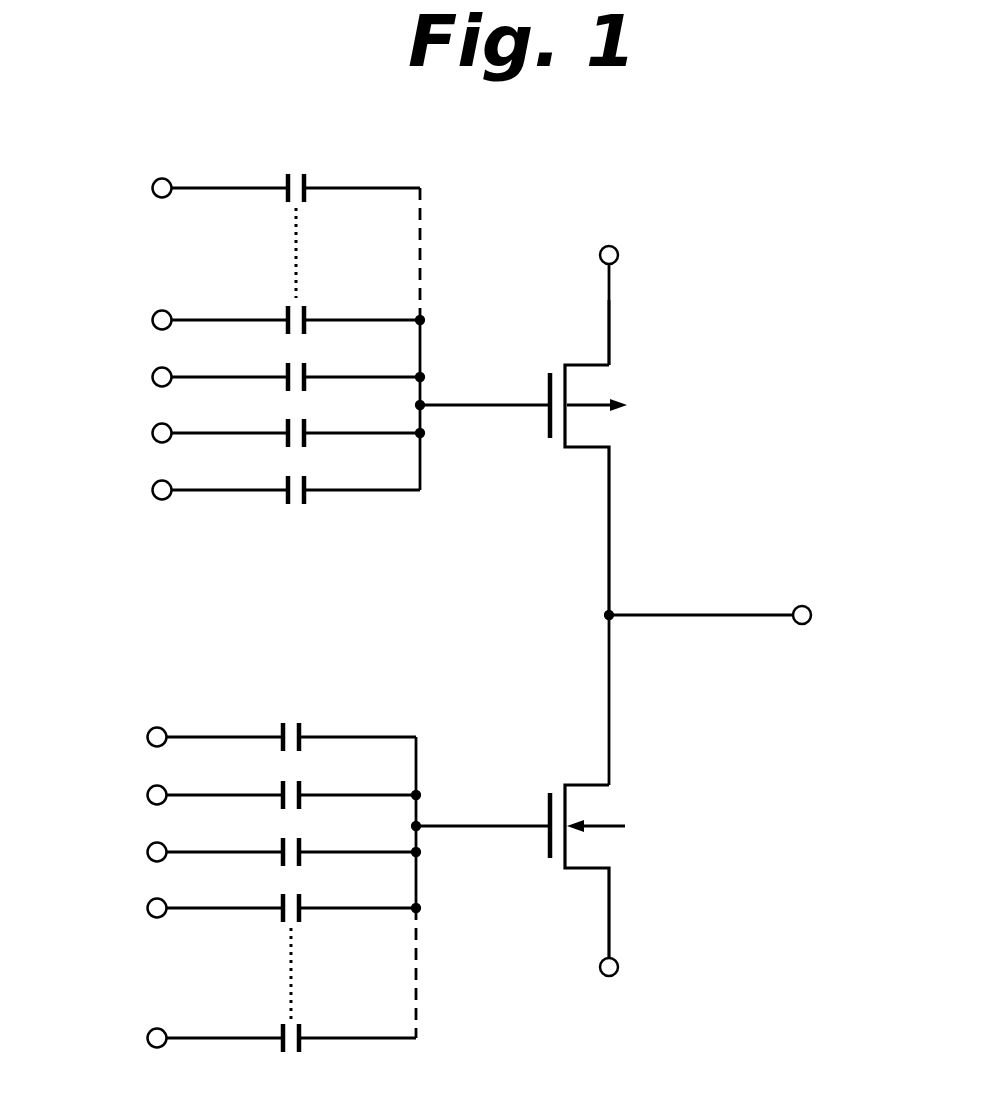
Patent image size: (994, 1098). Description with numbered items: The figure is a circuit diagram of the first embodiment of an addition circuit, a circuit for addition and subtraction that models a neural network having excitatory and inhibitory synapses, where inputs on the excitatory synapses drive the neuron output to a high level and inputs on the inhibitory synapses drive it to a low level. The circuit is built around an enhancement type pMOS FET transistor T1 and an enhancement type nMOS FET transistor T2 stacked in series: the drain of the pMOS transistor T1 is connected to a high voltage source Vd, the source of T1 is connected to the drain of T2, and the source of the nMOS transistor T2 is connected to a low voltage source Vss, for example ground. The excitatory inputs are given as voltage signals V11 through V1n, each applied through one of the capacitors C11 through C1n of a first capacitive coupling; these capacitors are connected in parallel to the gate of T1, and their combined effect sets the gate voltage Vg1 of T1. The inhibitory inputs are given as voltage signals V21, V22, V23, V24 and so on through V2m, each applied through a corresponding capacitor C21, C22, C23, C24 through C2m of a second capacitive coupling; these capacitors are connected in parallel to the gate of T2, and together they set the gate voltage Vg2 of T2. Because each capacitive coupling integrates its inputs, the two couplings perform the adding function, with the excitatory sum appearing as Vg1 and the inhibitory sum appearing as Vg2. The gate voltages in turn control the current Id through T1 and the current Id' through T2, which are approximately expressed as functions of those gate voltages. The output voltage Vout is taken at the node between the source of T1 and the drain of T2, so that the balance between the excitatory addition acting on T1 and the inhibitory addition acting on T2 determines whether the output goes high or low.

The excitatory input voltage signal V11 is at (167, 184).
The excitatory input voltage signal V1n is at (167, 486).
The excitatory coupling capacitor C11 is at (354, 177).
The excitatory coupling capacitor C1n is at (354, 479).
The gate voltage of T1 Vg1 is at (483, 403).
The high voltage source Vd is at (609, 286).
The current through T1 Id is at (631, 334).
The enhancement type pMOS FET transistor T1 is at (607, 393).
The output voltage Vout is at (739, 617).
The current through T2 Id' is at (634, 702).
The enhancement type nMOS FET transistor T2 is at (612, 813).
The low voltage source Vss is at (611, 988).
The inhibitory input voltage signal V21 is at (183, 733).
The inhibitory input voltage signal V22 is at (183, 791).
The inhibitory input voltage signal V23 is at (183, 848).
The inhibitory input voltage signal V24 is at (183, 904).
The inhibitory input voltage signal V2m is at (182, 1034).
The inhibitory coupling capacitor C21 is at (349, 725).
The inhibitory coupling capacitor C22 is at (349, 783).
The inhibitory coupling capacitor C23 is at (349, 840).
The inhibitory coupling capacitor C24 is at (349, 896).
The inhibitory coupling capacitor C2m is at (349, 1026).
The gate voltage of T2 Vg2 is at (481, 825).